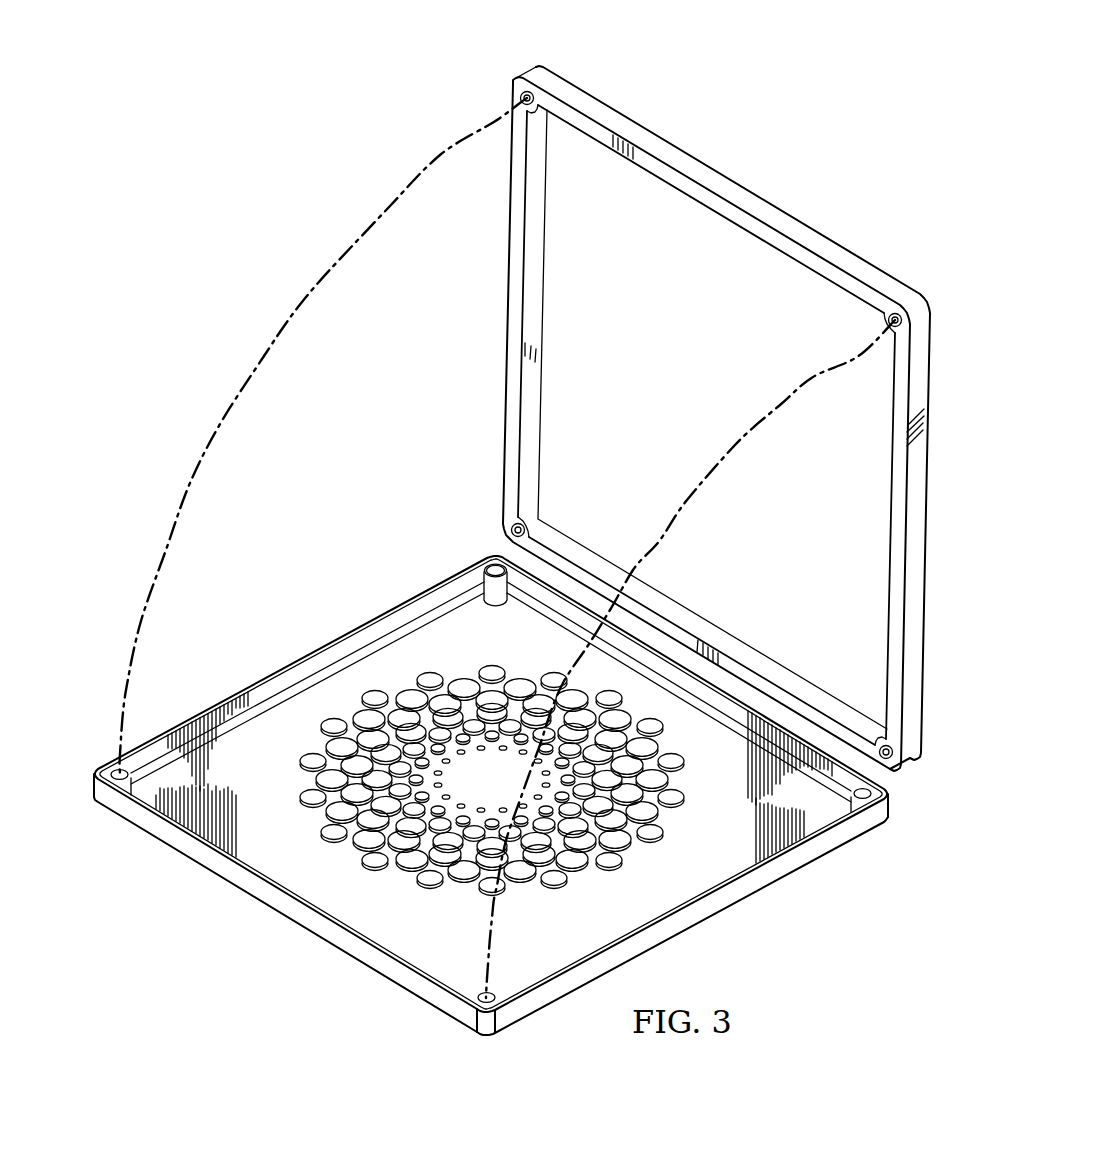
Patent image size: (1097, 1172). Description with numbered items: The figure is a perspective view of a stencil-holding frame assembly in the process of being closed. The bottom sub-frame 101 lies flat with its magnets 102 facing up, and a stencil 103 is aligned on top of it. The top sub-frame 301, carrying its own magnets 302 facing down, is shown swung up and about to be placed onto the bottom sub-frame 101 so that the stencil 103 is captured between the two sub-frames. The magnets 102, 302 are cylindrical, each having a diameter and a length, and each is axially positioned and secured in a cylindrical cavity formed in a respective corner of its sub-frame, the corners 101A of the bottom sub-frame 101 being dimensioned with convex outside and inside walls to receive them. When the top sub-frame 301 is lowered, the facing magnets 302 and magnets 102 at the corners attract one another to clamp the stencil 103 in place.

The bottom sub-frame 101 is at (290, 914).
The corner posts of base plate 101A is at (493, 563).
The magnets 102 is at (503, 573).
The stencil 103 is at (316, 657).
The top sub-frame 301 is at (734, 180).
The magnets 302 is at (521, 94).